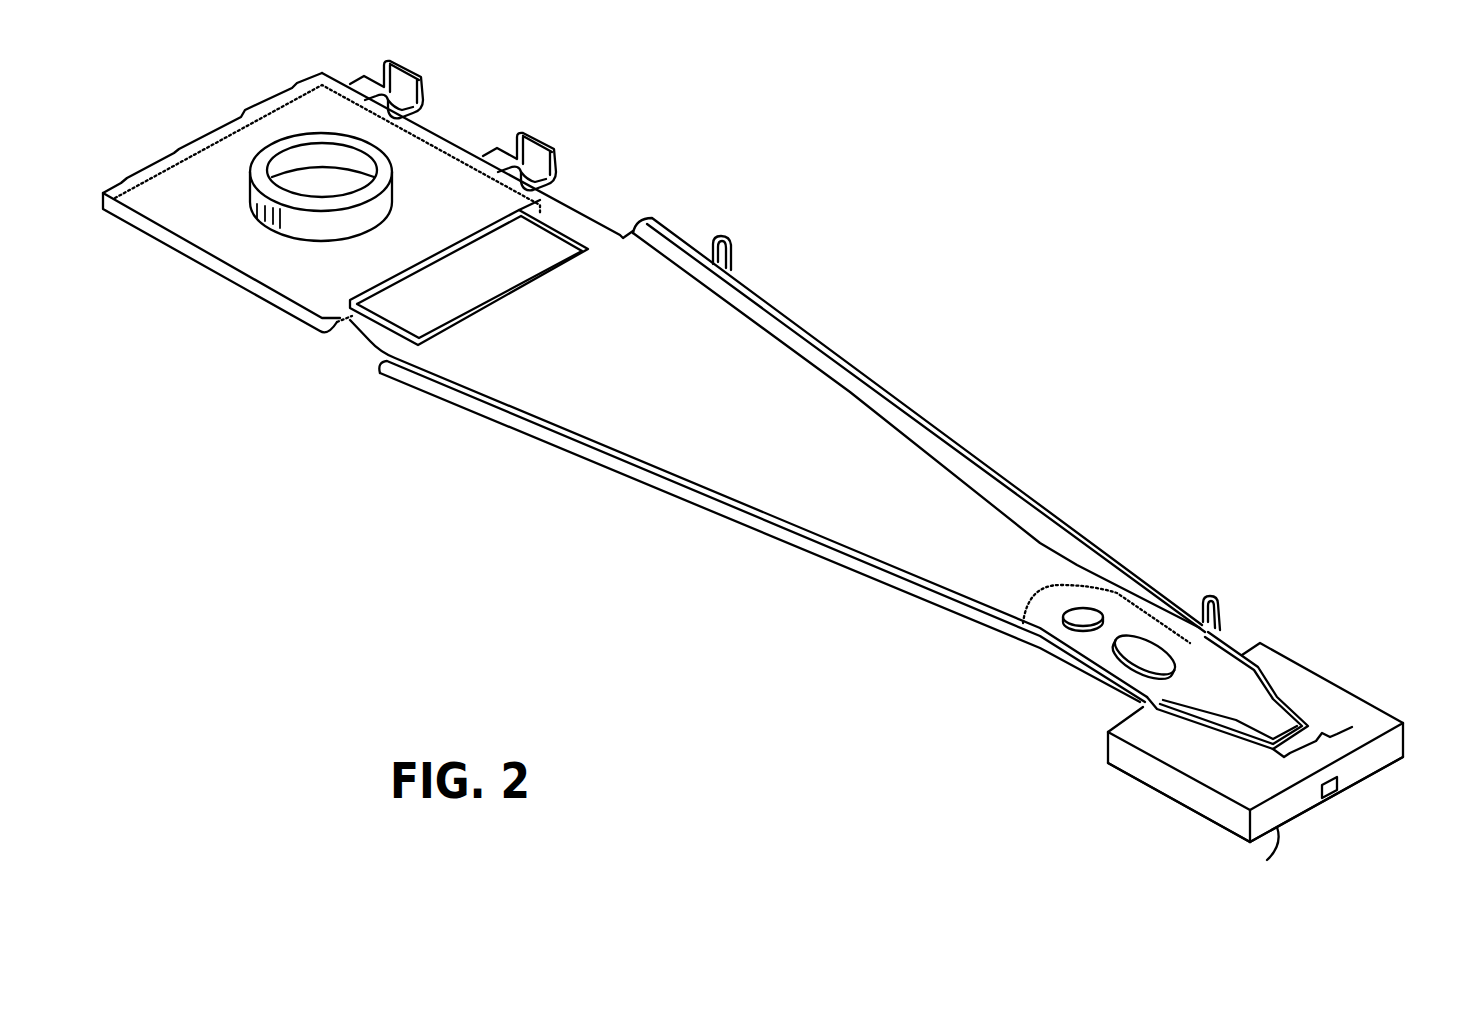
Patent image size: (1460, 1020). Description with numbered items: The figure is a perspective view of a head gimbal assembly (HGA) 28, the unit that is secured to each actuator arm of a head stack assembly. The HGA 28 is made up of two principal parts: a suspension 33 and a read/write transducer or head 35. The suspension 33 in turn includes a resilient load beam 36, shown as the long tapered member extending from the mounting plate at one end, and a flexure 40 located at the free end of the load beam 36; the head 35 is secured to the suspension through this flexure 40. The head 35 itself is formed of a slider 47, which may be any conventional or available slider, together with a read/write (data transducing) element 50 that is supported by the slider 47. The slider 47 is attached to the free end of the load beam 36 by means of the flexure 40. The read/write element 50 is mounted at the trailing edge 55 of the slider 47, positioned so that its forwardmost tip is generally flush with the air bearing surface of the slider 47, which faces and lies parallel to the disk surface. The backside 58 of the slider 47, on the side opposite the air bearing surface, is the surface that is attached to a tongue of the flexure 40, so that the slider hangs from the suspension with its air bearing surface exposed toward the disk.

The head gimbal assembly 28 is at (888, 205).
The suspension 33 is at (1086, 500).
The read/write head 35 is at (1251, 724).
The load beam 36 is at (863, 447).
The flexure 40 is at (1175, 724).
The slider 47 is at (1268, 752).
The read/write element 50 is at (1330, 793).
The trailing edge 55 is at (1390, 756).
The backside 58 is at (1193, 740).